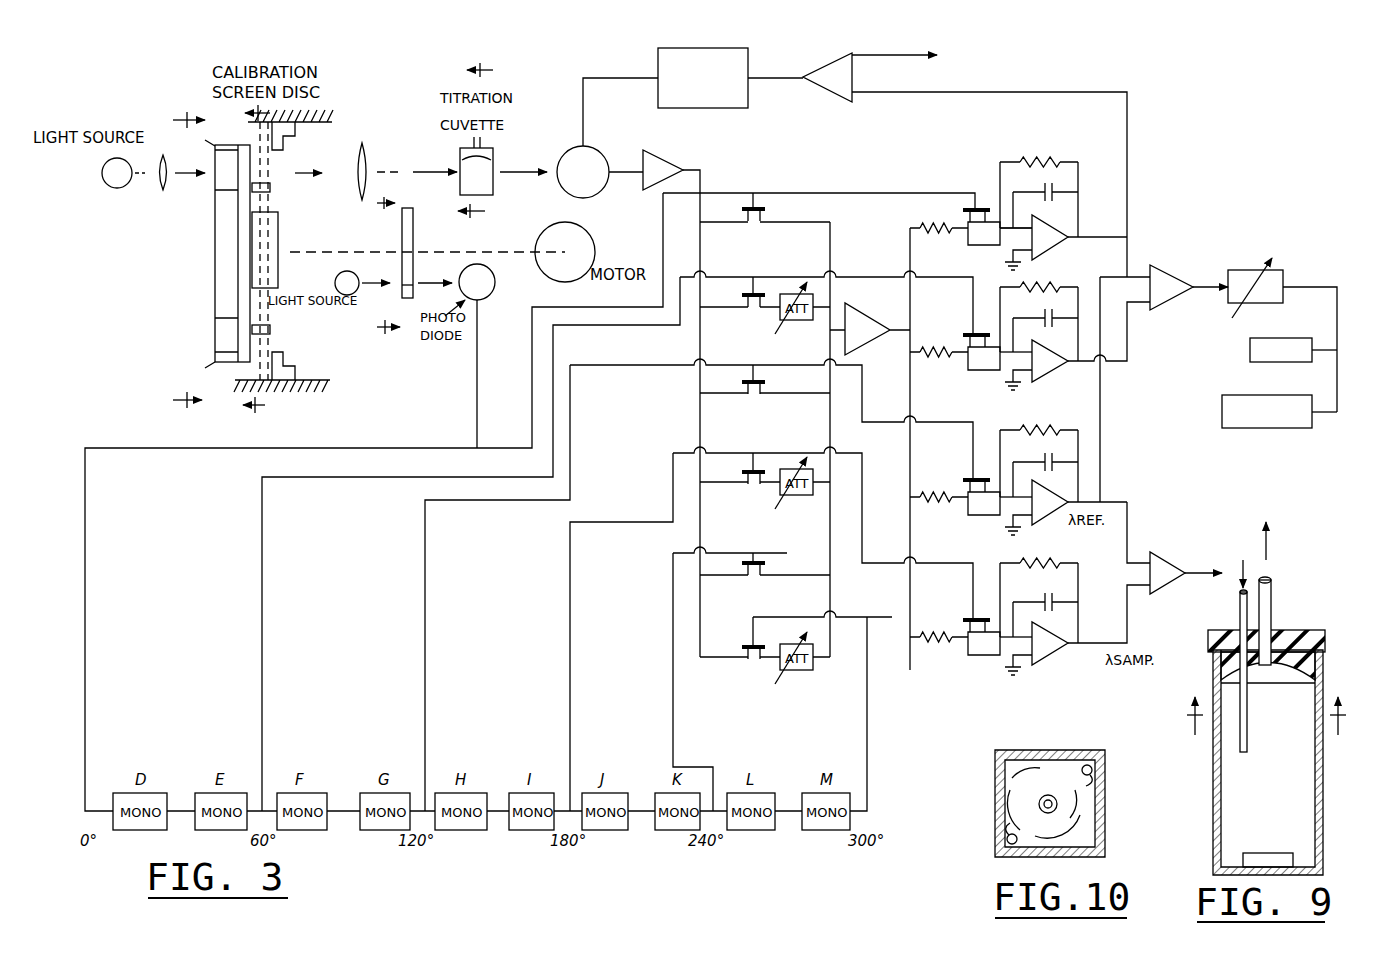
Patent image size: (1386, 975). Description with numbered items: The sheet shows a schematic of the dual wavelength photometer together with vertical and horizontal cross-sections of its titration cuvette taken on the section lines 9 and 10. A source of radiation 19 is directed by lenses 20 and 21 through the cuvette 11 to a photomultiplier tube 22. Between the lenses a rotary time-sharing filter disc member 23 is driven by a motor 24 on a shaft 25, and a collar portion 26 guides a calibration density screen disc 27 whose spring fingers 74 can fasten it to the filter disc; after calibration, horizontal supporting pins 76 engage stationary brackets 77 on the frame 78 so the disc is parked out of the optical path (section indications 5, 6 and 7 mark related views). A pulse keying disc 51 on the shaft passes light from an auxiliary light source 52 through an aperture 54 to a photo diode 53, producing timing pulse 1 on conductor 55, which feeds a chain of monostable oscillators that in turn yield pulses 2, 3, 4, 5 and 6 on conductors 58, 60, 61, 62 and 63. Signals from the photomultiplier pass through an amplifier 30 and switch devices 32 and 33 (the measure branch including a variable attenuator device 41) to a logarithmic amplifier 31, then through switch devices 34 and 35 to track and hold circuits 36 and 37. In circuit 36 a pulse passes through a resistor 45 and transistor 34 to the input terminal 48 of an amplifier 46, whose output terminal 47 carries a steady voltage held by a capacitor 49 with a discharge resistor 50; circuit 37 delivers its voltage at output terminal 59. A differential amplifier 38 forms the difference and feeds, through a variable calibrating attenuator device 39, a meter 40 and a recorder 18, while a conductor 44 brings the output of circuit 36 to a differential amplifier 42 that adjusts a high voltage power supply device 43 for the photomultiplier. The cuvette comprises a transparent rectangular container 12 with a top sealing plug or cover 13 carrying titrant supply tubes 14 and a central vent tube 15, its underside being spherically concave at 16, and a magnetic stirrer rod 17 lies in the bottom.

In FIG. 3, the timing pulse 1 is at (530, 502).
In FIG. 3, the pulse 2 is at (617, 541).
In FIG. 3, the pulse 3 is at (699, 585).
In FIG. 3, the pulse 4 is at (771, 629).
In FIG. 3, the pulse 5 is at (179, 259).
In FIG. 3, the pulse 6 is at (264, 259).
In FIG. 3, the section line 7 is at (381, 273).
In FIG. 3, the section line 9— 9 is at (485, 142).
In FIG. 9, the section line 10— 10 is at (1270, 727).
In FIG. 3, the cuvette 11 is at (494, 183).
In FIG. 9, the cuvette 11 is at (1190, 678).
In FIG. 10, the transparent rectangular container 12 is at (1022, 752).
In FIG. 9, the transparent rectangular container 12 is at (1213, 772).
In FIG. 9, the top sealing plug or cover 13 is at (1290, 630).
In FIG. 10, the titrant supply tubes 14 is at (1100, 782).
In FIG. 9, the titrant supply tubes 14 is at (1240, 622).
In FIG. 10, the central vent tube 15 is at (1060, 806).
In FIG. 9, the central vent tube 15 is at (1270, 598).
In FIG. 10, the spherically concave bottom face 16 is at (1040, 790).
In FIG. 9, the spherically concave bottom face 16 is at (1282, 682).
In FIG. 9, the stirrer rod 17 is at (1262, 853).
In FIG. 3, the recorder 18 is at (1222, 428).
In FIG. 3, the source of radiation 19 is at (103, 183).
In FIG. 3, the lens 20 is at (160, 190).
In FIG. 3, the lens 21 is at (357, 180).
In FIG. 3, the photomultiplier tube 22 is at (597, 195).
In FIG. 3, the rotary time-sharing filter disc member 23 is at (214, 290).
In FIG. 3, the motor 24 is at (538, 272).
In FIG. 3, the motor shaft 25 is at (322, 252).
In FIG. 3, the collar portion 26 is at (278, 216).
In FIG. 3, the calibration density screen disc 27 is at (252, 168).
In FIG. 3, the amplifier 30 is at (672, 158).
In FIG. 3, the logarithmic amplifier 31 is at (870, 312).
In FIG. 3, the electronic switch device 32 is at (758, 222).
In FIG. 3, the electronic switch device 33 is at (758, 308).
In FIG. 3, the electronic switch device 34 is at (975, 195).
In FIG. 3, the electronic switch device 35 is at (965, 340).
In FIG. 3, the track and hold integrating circuit 36 is at (1072, 218).
In FIG. 3, the track and hold integrating circuit 37 is at (1072, 325).
In FIG. 3, the differential amplifier 38 is at (1160, 305).
In FIG. 3, the variable calibrating attenuator device 39 is at (1268, 252).
In FIG. 3, the meter 40 is at (1250, 352).
In FIG. 3, the variable attenuator device 41 is at (800, 322).
In FIG. 3, the differential amplifier 42 is at (826, 66).
In FIG. 3, the high voltage power supply device 43 is at (725, 108).
In FIG. 3, the conductor 44 is at (1040, 92).
In FIG. 3, the resistor 45 is at (930, 235).
In FIG. 3, the amplifier 46 is at (1030, 255).
In FIG. 3, the output terminal 47 is at (1085, 237).
In FIG. 3, the input terminal 48 is at (1015, 225).
In FIG. 3, the capacitor 49 is at (1043, 190).
In FIG. 3, the discharge resistor 50 is at (1045, 150).
In FIG. 3, the pulse keying disc 51 is at (413, 228).
In FIG. 3, the auxiliary light source 52 is at (357, 275).
In FIG. 3, the photo diode 53 is at (492, 274).
In FIG. 3, the aperture 54 is at (414, 278).
In FIG. 3, the conductor 55 is at (360, 448).
In FIG. 3, the conductor 58 is at (318, 482).
In FIG. 3, the output terminal 59 is at (1080, 363).
In FIG. 3, the conductor 60 is at (427, 640).
In FIG. 3, the conductor 61 is at (572, 647).
In FIG. 3, the conductor 62 is at (677, 695).
In FIG. 3, the conductor 63 is at (869, 700).
In FIG. 3, the spring fingers 74 is at (232, 382).
In FIG. 3, the supporting pins 76 is at (272, 330).
In FIG. 3, the stationary brackets 77 is at (296, 130).
In FIG. 3, the frame 78 is at (335, 112).